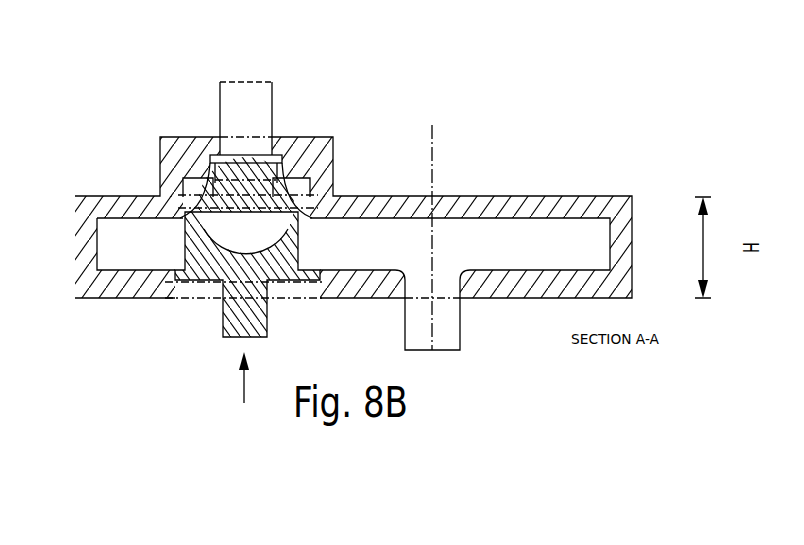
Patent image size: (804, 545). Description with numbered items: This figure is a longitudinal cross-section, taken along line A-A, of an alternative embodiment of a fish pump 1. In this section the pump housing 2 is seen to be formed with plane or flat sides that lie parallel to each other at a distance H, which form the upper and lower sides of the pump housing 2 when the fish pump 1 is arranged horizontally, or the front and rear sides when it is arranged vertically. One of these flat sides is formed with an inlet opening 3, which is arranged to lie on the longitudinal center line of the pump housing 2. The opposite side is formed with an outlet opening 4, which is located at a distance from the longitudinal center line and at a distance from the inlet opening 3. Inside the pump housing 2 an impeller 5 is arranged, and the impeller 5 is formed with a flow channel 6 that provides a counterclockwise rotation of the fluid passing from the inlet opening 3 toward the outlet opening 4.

The fish pump 1 is at (547, 157).
The pump housing 2 is at (515, 287).
The inlet opening 3 is at (248, 70).
The outlet opening 4 is at (432, 323).
The impeller 5 is at (300, 280).
The flow channel 6 is at (241, 232).